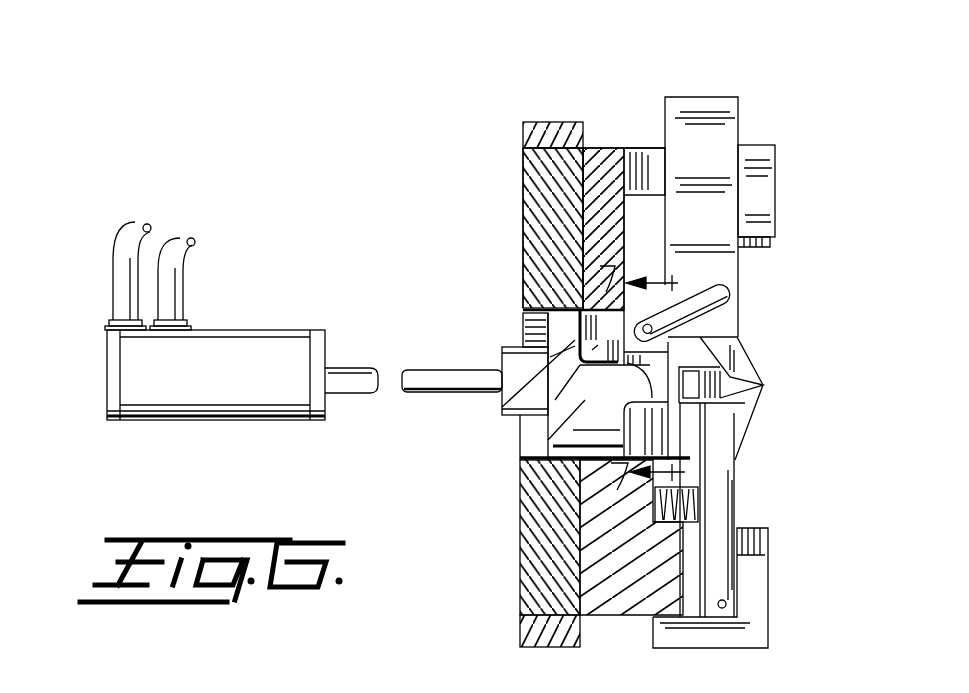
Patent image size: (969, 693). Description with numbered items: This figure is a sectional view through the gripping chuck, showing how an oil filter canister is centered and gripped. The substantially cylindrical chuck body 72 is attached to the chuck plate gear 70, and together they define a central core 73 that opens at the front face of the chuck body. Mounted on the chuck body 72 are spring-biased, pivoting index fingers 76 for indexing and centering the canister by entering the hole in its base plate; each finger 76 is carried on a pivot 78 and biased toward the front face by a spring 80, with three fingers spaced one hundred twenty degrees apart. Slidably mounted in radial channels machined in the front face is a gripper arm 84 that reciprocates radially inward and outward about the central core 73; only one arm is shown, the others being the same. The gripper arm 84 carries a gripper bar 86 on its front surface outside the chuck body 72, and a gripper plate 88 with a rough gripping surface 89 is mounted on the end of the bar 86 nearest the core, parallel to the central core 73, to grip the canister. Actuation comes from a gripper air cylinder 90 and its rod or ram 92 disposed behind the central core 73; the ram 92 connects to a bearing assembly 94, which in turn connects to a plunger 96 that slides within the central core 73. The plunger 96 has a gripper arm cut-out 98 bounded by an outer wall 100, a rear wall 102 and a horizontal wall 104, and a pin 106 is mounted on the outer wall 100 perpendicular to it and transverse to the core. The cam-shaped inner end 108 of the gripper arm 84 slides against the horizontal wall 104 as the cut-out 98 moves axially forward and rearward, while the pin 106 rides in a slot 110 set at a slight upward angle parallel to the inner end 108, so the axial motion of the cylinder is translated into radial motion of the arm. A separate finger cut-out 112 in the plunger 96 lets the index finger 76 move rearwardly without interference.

The chuck plate gear 70 is at (550, 122).
The chuck body 72 is at (603, 148).
The central core 73 is at (523, 320).
The index finger 76 is at (738, 422).
The pivot 78 is at (724, 602).
The spring 80 is at (693, 508).
The gripper arm 84 is at (740, 113).
The gripper bar 86 is at (775, 177).
The gripper plate 88 is at (794, 258).
The rough gripping surface 89 is at (760, 245).
The gripper air cylinder 90 is at (207, 422).
The rod or ram 92 is at (347, 400).
The bearing assembly 94 is at (517, 363).
The plunger 96 is at (520, 470).
The gripper arm cut-out 98 is at (495, 414).
The outer wall 100 is at (574, 372).
The rear wall 102 is at (498, 417).
The horizontal wall 104 is at (765, 389).
The pin 106 is at (738, 336).
The inner end 108 is at (573, 325).
The slot 110 is at (735, 287).
The finger cut-out 112 is at (653, 432).